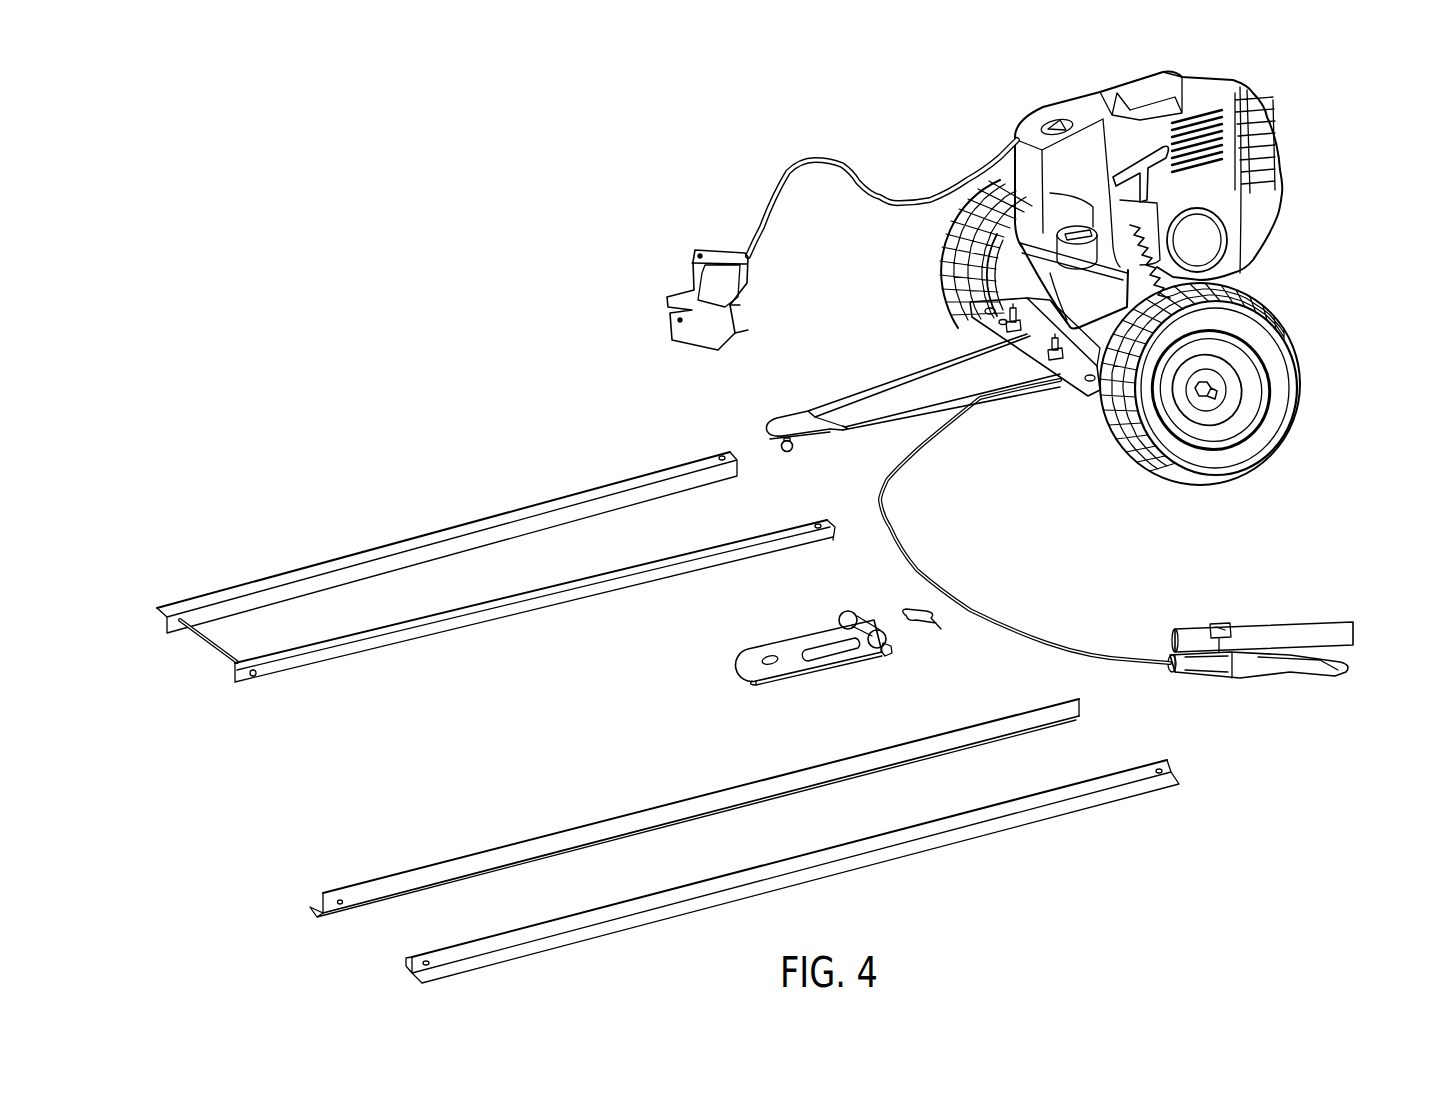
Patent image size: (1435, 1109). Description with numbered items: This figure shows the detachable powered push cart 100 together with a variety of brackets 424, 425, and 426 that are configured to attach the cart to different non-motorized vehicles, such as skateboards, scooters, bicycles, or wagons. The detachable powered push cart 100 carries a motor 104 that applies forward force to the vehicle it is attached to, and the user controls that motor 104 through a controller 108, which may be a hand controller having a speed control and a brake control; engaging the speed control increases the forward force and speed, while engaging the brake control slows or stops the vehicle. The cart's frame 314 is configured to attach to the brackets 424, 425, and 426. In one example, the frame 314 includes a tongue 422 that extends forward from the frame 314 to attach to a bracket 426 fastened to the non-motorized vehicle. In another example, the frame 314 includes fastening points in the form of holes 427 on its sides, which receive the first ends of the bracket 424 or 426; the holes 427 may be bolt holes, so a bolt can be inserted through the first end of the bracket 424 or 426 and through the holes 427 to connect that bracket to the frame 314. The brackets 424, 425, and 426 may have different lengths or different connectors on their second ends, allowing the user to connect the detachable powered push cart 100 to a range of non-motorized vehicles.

The detachable powered push cart 100 is at (268, 93).
The motor 104 is at (995, 106).
The controller 108 is at (666, 275).
The frame 314 is at (881, 375).
The tongue 422 is at (806, 452).
The bracket 424 is at (417, 526).
The bracket 425 is at (663, 798).
The bracket 426 is at (726, 680).
The holes 427 is at (1081, 392).